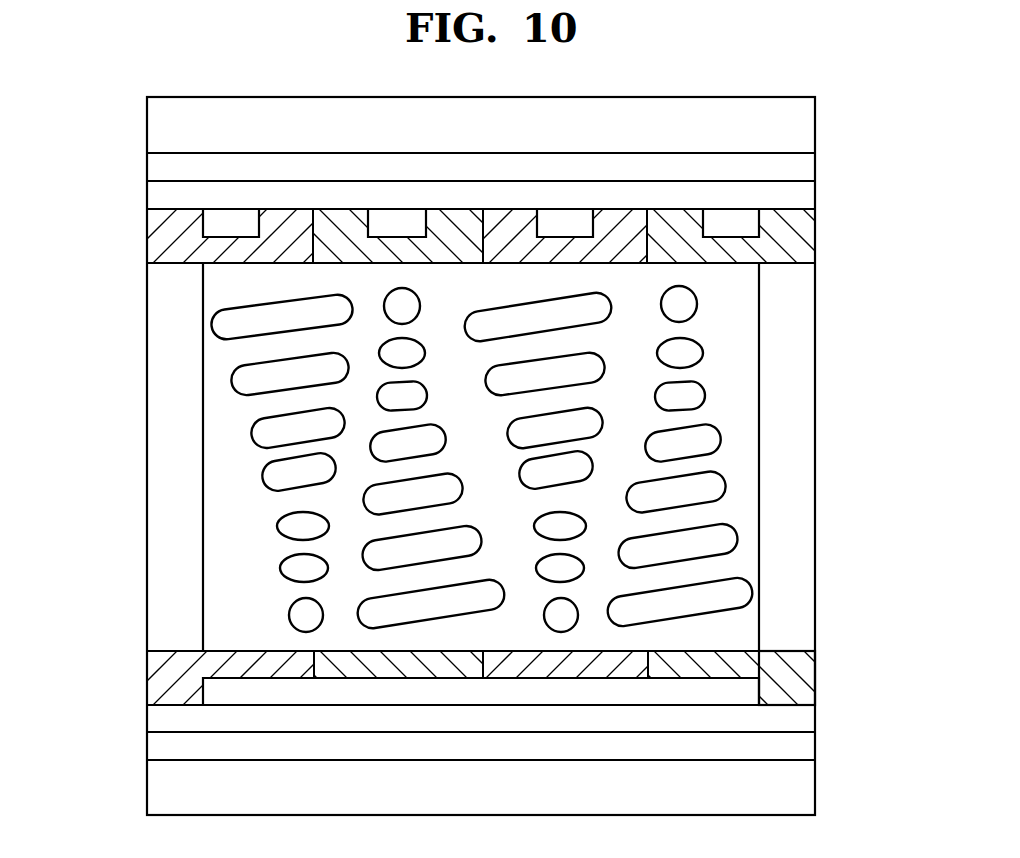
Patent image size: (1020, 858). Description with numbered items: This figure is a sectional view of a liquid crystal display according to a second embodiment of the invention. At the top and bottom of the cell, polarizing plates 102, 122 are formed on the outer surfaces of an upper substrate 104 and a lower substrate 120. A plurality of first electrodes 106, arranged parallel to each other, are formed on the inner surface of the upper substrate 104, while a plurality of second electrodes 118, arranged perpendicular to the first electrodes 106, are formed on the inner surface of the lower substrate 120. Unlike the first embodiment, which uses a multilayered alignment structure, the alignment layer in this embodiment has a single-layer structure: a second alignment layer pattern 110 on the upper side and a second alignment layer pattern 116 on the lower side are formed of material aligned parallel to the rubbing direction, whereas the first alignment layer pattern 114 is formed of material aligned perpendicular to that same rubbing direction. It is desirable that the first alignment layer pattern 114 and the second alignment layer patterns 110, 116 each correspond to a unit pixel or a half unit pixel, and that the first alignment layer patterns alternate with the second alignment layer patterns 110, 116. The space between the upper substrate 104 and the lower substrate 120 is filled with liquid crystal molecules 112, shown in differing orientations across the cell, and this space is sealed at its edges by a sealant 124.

The polarizing plate 102 is at (798, 127).
The upper substrate 104 is at (798, 166).
The first electrodes 106 is at (220, 225).
The second alignment layer pattern 110 is at (620, 227).
The liquid crystal molecules 112 is at (222, 324).
The first alignment layer pattern 114 is at (798, 680).
The second alignment layer pattern 116 is at (588, 667).
The second electrodes 118 is at (220, 686).
The lower substrate 120 is at (798, 750).
The polarizing plate 122 is at (798, 790).
The sealant 124 is at (798, 487).